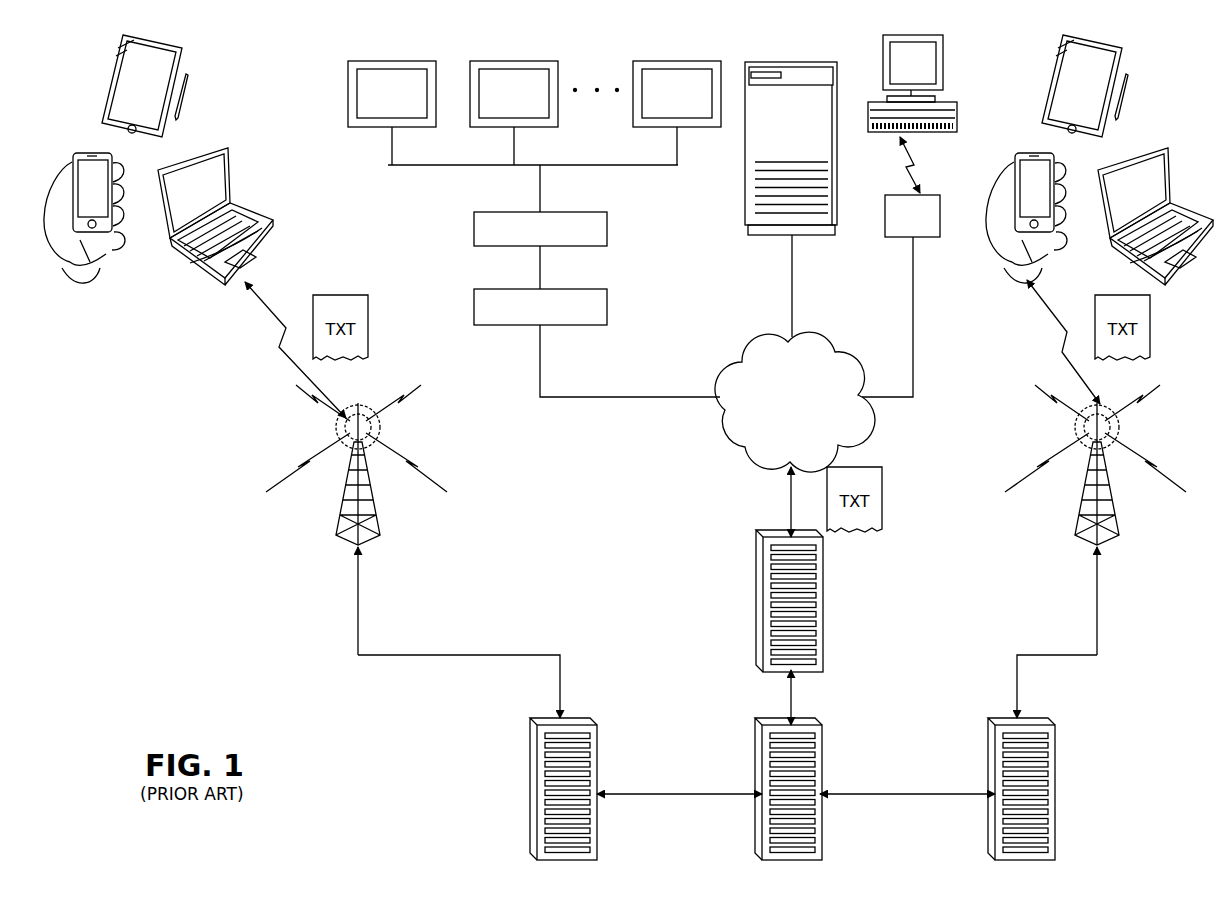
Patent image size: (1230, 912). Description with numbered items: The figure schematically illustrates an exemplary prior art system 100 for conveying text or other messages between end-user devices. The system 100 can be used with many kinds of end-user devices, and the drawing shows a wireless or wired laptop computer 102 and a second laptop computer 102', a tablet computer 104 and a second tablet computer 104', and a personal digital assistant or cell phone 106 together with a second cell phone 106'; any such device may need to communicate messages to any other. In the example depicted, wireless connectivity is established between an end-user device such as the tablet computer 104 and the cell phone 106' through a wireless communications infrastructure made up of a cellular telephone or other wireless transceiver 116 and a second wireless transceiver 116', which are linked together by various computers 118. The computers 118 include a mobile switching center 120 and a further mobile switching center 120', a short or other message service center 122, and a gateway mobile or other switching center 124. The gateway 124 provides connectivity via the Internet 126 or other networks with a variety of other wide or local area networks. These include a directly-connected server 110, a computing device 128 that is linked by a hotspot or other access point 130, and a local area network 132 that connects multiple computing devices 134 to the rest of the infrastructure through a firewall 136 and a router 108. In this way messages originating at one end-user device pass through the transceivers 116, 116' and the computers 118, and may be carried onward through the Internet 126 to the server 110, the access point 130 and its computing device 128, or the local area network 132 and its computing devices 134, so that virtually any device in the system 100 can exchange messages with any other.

The system 100 is at (455, 757).
The laptop computer 102 is at (216, 216).
The laptop computer 102' is at (1157, 216).
The tablet computer 104 is at (169, 86).
The tablet computer 104' is at (1113, 86).
The cell phone 106 is at (81, 204).
The cell phone 106' is at (1024, 204).
The router 108 is at (486, 308).
The server 110 is at (752, 183).
The wireless transceiver 116 is at (356, 420).
The wireless transceiver 116' is at (1095, 420).
The computers 118 is at (855, 615).
The mobile switching center 120 is at (589, 771).
The mobile switching center 120' is at (1051, 789).
The message service center 122 is at (818, 755).
The gateway mobile switching center 124 is at (760, 563).
The Internet 126 is at (776, 408).
The computing device 128 is at (944, 67).
The access point 130 is at (885, 212).
The local area network 132 is at (412, 167).
The computing devices 134 is at (345, 92).
The firewall 136 is at (474, 229).